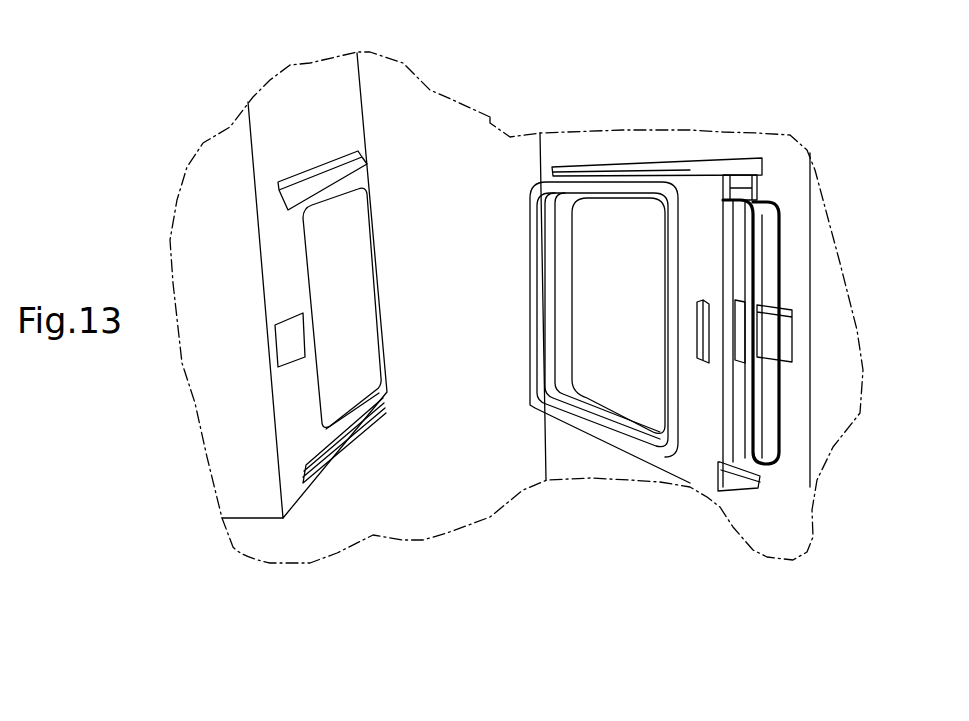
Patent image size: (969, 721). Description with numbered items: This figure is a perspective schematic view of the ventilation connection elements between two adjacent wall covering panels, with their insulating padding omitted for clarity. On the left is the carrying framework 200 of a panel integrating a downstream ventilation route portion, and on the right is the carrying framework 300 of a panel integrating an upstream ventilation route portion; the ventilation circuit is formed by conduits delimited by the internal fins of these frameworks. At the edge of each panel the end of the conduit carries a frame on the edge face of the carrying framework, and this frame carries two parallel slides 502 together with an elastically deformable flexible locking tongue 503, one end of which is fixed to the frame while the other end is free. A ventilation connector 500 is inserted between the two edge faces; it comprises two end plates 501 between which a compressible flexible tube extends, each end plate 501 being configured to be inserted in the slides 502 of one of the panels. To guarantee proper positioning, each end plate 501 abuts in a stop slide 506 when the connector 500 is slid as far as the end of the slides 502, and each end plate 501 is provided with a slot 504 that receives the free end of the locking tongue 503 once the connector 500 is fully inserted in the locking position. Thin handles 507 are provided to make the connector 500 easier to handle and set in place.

The carrying framework 200 is at (352, 72).
The carrying framework 300 is at (712, 192).
The ventilation connector 500 is at (727, 494).
The end plate 501 is at (760, 158).
The slide 502 is at (307, 176).
The locking tongue 503 is at (288, 337).
The slot 504 is at (704, 357).
The stop slide 506 is at (380, 232).
The handle 507 is at (781, 380).